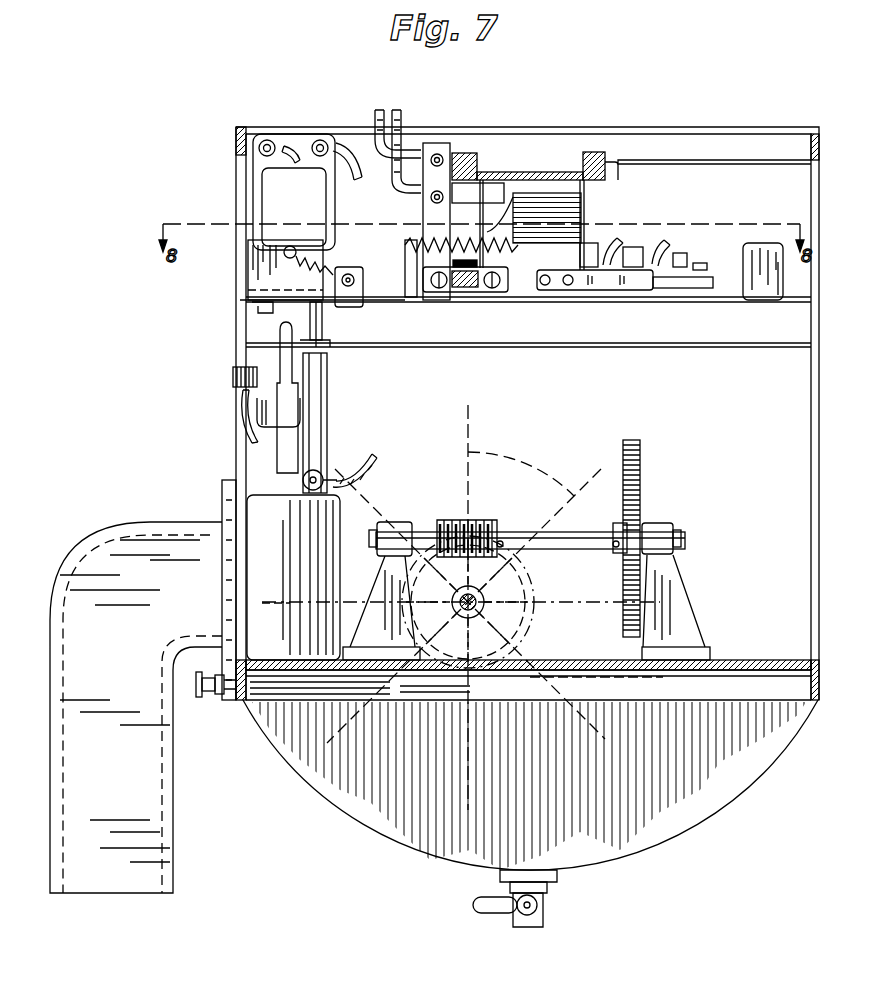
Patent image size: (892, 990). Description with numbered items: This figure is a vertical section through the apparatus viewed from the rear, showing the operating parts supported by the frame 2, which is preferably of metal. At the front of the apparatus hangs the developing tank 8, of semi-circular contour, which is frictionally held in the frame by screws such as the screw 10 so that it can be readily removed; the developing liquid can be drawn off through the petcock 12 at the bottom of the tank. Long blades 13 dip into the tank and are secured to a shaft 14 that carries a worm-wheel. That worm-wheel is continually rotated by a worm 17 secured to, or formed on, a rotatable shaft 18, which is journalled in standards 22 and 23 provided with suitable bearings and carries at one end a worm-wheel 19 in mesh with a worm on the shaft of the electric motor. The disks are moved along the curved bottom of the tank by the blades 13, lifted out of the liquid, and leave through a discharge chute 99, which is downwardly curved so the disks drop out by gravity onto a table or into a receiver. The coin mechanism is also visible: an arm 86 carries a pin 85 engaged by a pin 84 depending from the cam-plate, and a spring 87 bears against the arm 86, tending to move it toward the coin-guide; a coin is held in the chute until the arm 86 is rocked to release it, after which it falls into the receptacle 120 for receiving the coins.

The frame 2 is at (817, 407).
The developing tank 8 is at (710, 803).
The screw 10 is at (201, 702).
The petcock 12 is at (517, 927).
The blades 13 is at (580, 490).
The shaft 14 is at (475, 600).
The worm 17 is at (448, 522).
The rotatable shaft 18 is at (568, 538).
The worm-wheel 19 is at (640, 452).
The standard 22 is at (378, 584).
The standard 23 is at (668, 578).
The pin 84 is at (322, 320).
The pin 85 is at (327, 345).
The arm 86 is at (288, 350).
The spring 87 is at (255, 418).
The discharge chute 99 is at (150, 826).
The receptacle 120 is at (267, 525).